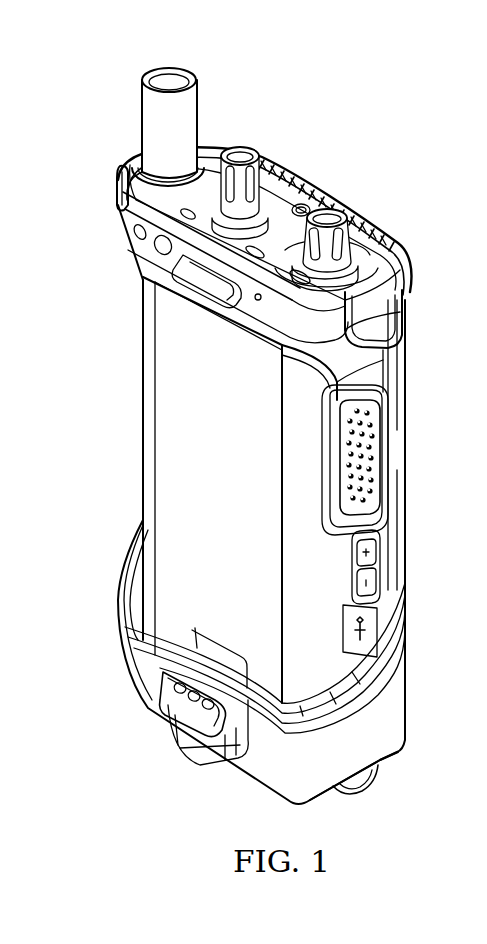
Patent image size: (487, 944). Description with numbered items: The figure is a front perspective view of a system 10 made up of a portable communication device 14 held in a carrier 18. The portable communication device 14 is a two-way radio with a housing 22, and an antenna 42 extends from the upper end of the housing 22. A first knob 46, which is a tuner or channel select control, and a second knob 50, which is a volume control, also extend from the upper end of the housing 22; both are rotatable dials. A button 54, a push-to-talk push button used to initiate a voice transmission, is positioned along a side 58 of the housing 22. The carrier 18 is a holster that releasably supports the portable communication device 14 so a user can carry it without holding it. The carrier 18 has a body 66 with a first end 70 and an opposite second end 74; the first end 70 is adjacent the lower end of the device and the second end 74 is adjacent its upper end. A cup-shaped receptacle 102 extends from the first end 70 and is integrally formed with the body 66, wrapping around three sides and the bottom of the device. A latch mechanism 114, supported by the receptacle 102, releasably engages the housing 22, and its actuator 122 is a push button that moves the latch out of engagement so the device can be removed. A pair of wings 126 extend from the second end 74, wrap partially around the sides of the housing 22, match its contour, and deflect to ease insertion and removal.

The system 10 is at (350, 106).
The portable communication device 14 is at (173, 363).
The carrier 18 is at (405, 682).
The housing 22 is at (143, 428).
The antenna 42 is at (150, 125).
The first knob 46 is at (262, 172).
The second knob 50 is at (345, 208).
The button 54 is at (372, 450).
The side 58 is at (380, 515).
The body 66 is at (397, 415).
The first end 70 is at (397, 757).
The second end 74 is at (385, 245).
The receptacle 102 is at (380, 758).
The latch mechanism 114 is at (185, 735).
The actuator 122 is at (165, 700).
The wings 126 is at (118, 197).